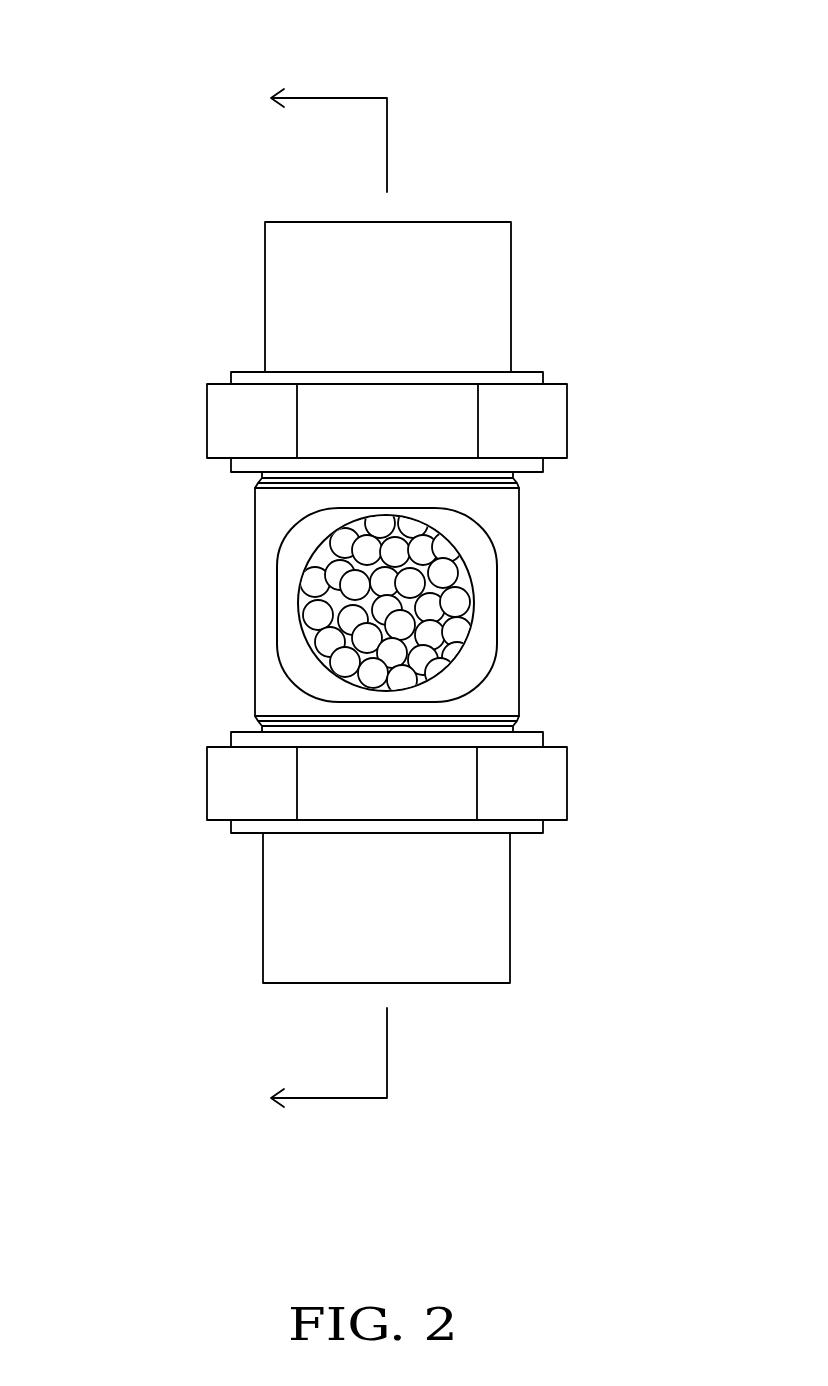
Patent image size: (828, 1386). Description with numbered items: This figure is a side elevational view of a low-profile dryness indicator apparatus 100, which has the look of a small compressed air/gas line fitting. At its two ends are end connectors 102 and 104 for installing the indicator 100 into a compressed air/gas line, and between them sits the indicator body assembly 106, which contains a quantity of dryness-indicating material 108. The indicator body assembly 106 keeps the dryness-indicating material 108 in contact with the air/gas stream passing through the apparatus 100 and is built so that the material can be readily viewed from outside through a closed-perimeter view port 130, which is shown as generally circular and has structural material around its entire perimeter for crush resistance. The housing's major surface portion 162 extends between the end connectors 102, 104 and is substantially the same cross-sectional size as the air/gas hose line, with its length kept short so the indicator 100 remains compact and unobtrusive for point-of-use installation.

The low-profile dryness indicator apparatus 100 is at (175, 130).
The end connector 102 is at (248, 285).
The end connector 104 is at (238, 903).
The indicator body assembly 106 is at (542, 678).
The dryness-indicating material 108 is at (428, 637).
The closed-perimeter view port 130 is at (472, 545).
The major surface portion 162 is at (208, 472).